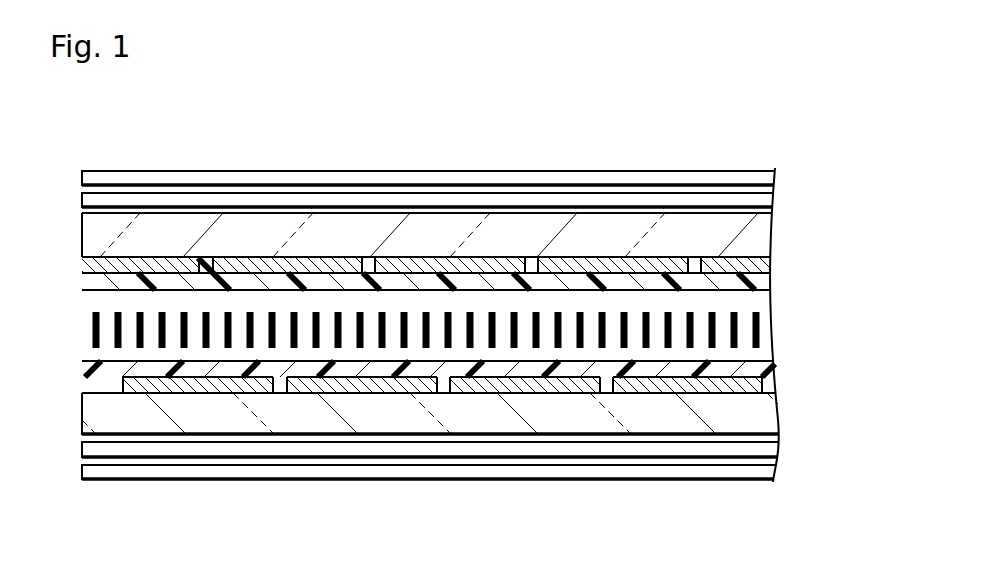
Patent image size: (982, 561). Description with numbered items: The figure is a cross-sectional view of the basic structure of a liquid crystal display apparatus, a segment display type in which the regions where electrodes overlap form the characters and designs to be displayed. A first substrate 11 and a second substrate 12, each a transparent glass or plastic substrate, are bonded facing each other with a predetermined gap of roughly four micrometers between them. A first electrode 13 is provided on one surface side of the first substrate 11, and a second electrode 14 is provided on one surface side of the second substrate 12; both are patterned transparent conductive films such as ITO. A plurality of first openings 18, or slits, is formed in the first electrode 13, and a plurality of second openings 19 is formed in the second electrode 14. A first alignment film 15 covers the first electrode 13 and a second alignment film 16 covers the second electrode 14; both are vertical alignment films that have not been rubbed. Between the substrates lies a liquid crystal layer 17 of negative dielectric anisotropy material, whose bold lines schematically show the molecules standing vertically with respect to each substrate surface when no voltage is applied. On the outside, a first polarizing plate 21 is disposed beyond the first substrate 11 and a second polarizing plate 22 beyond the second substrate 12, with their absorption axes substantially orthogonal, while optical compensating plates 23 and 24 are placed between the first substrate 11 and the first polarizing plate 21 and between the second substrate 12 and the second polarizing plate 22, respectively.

The first substrate 11 is at (750, 415).
The second substrate 12 is at (765, 237).
The first electrode 13 is at (765, 380).
The second electrode 14 is at (768, 263).
The first alignment film 15 is at (758, 368).
The second alignment film 16 is at (765, 279).
The liquid crystal layer 17 is at (768, 322).
The first openings 18 is at (607, 393).
The second openings 19 is at (694, 249).
The first polarizing plate 21 is at (760, 474).
The second polarizing plate 22 is at (760, 180).
The optical compensating plate 23 is at (768, 450).
The optical compensating plate 24 is at (768, 201).